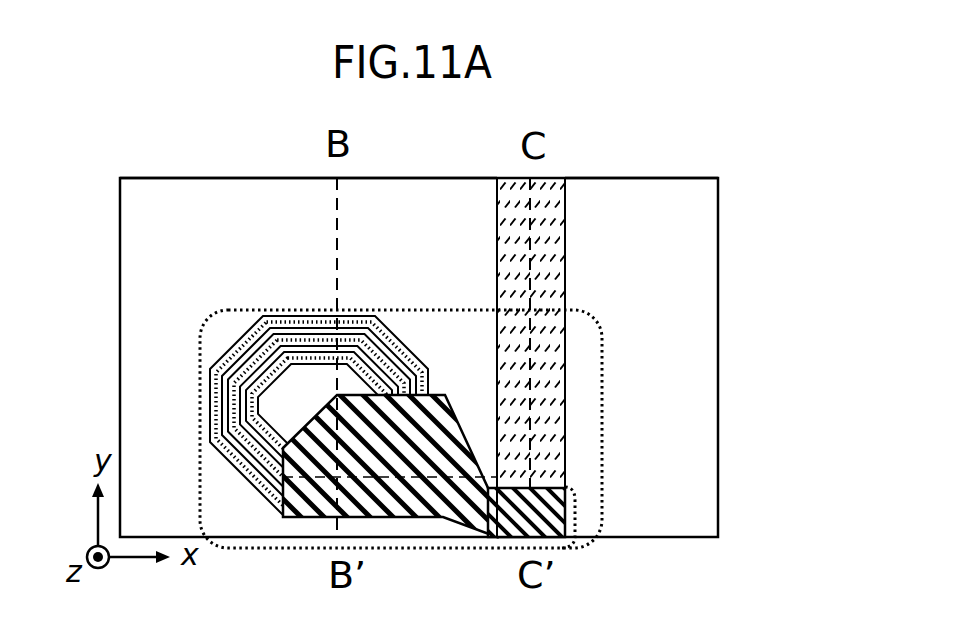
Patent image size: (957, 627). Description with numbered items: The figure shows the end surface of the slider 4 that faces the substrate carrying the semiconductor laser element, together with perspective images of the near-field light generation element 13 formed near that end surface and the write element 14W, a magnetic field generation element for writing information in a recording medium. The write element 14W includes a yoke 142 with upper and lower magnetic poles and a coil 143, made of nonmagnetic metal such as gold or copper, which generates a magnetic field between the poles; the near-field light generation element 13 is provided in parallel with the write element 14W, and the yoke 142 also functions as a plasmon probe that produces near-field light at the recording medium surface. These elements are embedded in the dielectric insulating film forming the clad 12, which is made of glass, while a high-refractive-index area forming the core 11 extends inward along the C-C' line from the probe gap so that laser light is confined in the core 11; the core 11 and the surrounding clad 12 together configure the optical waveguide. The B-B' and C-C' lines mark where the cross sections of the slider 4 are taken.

The slider 4 is at (682, 231).
The core 11 is at (553, 178).
The clad 12 is at (235, 178).
The near-field light generation element 13 is at (578, 500).
The write element 14W is at (210, 318).
The yoke 142 is at (457, 421).
The coil 143 is at (213, 375).